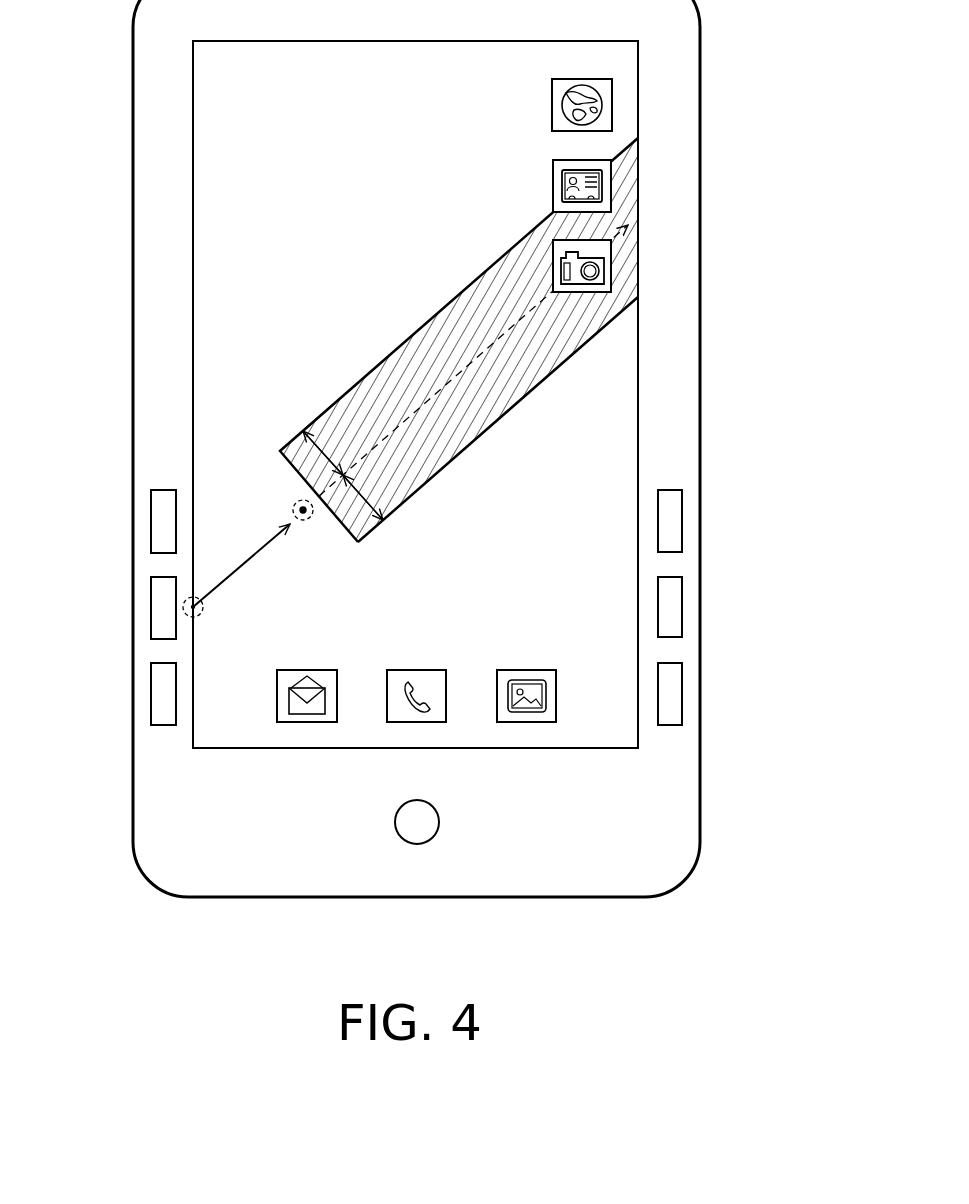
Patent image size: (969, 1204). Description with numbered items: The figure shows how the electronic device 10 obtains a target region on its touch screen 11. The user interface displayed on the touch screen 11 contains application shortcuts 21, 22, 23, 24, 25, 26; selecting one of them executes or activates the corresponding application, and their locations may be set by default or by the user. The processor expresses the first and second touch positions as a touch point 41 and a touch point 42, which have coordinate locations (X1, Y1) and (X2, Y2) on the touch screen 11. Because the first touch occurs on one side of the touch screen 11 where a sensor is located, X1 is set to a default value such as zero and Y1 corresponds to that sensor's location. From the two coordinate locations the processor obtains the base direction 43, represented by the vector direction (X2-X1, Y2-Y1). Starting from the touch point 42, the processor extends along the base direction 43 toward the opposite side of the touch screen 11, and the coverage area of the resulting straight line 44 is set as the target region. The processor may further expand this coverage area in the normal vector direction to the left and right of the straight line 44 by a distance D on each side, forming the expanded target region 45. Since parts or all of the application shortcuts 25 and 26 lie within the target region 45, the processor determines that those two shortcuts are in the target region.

The electronic device 10 is at (133, 130).
The touch screen 11 is at (193, 243).
The application shortcut 21 is at (306, 670).
The application shortcut 22 is at (417, 670).
The application shortcut 23 is at (526, 670).
The application shortcut 24 is at (612, 103).
The application shortcut 25 is at (611, 183).
The application shortcut 26 is at (611, 263).
The touch point 41 is at (203, 614).
The touch point 42 is at (294, 501).
The base direction 43 is at (250, 557).
The straight line 44 is at (413, 414).
The target region 45 is at (445, 440).